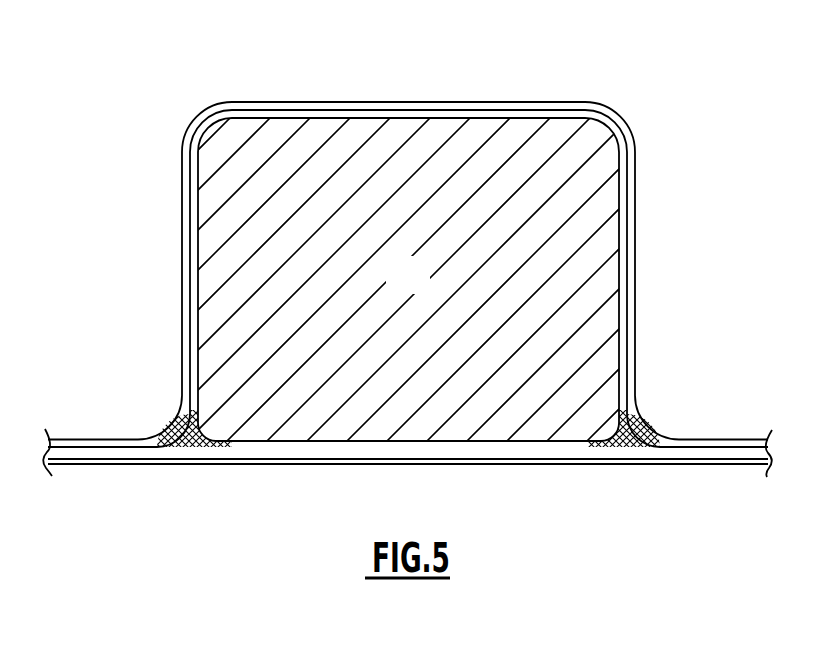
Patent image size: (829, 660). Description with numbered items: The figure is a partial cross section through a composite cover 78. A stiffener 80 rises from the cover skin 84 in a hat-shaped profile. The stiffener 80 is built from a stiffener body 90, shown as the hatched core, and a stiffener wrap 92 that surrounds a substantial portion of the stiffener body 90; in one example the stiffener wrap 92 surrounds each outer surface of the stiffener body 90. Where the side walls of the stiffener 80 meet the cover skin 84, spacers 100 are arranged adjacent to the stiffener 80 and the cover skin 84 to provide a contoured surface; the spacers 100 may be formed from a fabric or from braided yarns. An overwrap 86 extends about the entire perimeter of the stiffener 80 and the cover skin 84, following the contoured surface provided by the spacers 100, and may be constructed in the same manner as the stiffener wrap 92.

The composite cover 78 is at (116, 99).
The stiffener 80 is at (625, 90).
The cover skin 84 is at (738, 452).
The overwrap 86 is at (630, 247).
The stiffener body 90 is at (423, 287).
The stiffener wrap 92 is at (623, 297).
The spacer 100 is at (620, 443).